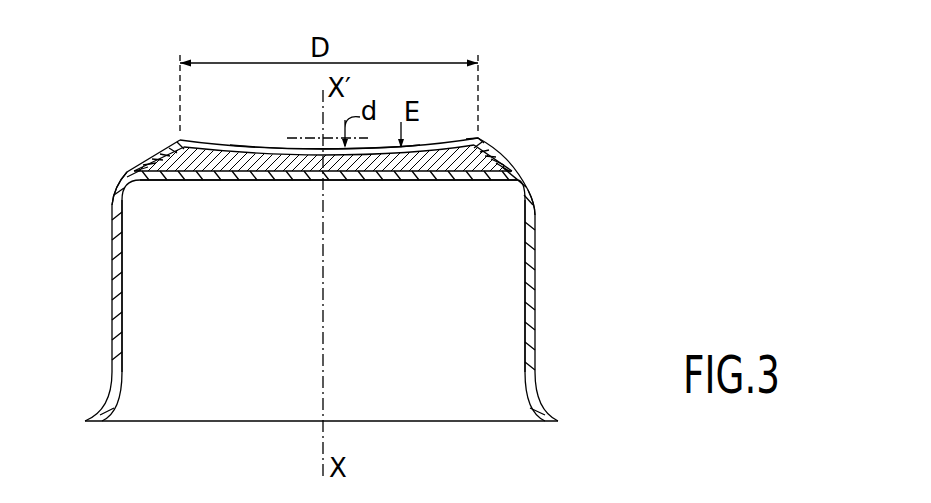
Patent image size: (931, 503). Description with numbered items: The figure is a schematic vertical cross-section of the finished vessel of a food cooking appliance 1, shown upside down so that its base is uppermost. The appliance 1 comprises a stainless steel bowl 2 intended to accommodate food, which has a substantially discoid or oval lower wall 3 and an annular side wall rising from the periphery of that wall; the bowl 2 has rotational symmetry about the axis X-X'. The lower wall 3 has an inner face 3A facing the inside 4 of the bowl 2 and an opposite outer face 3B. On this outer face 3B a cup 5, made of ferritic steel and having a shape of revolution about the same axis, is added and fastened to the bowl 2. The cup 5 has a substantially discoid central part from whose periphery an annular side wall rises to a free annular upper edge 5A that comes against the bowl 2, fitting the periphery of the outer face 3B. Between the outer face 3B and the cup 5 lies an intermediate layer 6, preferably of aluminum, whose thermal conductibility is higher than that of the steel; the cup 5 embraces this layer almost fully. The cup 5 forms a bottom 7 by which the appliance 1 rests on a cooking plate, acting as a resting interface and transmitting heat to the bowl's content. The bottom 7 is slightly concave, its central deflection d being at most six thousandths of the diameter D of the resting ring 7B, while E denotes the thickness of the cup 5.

The food cooking appliance 1 is at (567, 261).
The bowl 2 is at (110, 291).
The lower wall 3 is at (218, 183).
The inner face 3A is at (297, 181).
The outer face 3B is at (447, 150).
The inside of the bowl 4 is at (375, 316).
The cup 5 is at (176, 139).
The free annular upper edge 5A is at (118, 165).
The intermediate layer 6 is at (246, 156).
The bottom 7 is at (217, 130).
The resting ring 7B is at (482, 137).